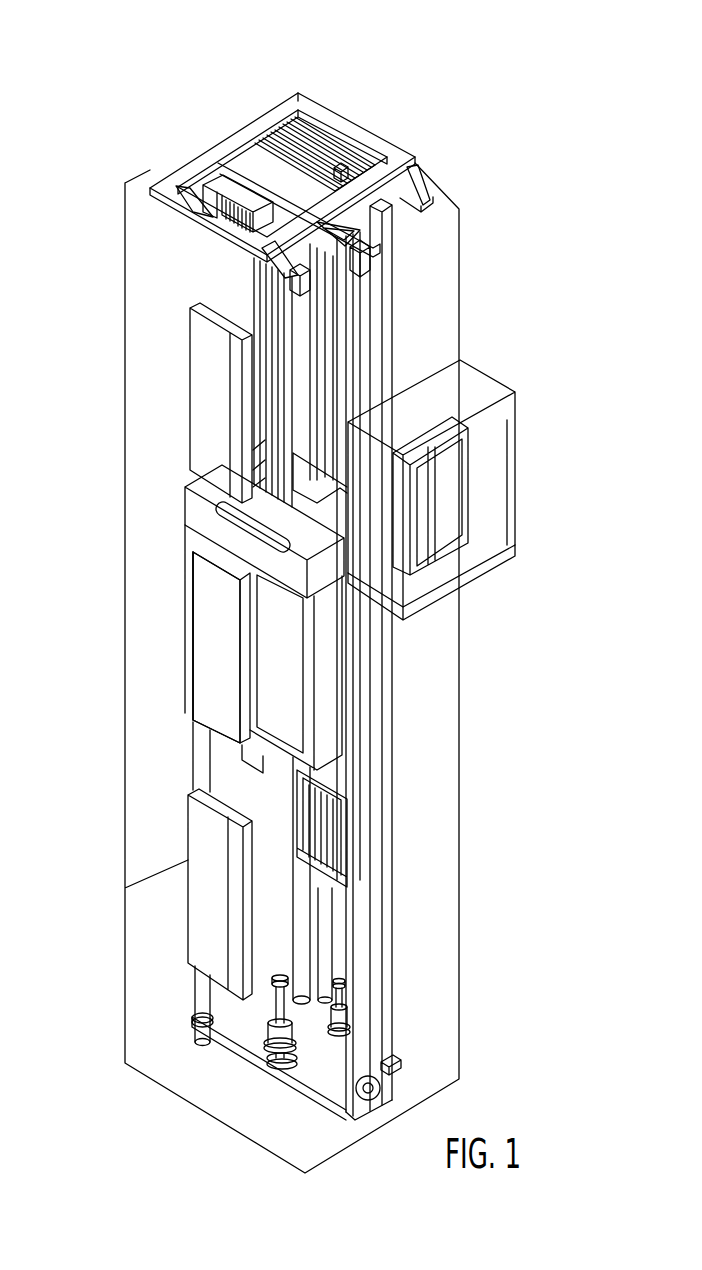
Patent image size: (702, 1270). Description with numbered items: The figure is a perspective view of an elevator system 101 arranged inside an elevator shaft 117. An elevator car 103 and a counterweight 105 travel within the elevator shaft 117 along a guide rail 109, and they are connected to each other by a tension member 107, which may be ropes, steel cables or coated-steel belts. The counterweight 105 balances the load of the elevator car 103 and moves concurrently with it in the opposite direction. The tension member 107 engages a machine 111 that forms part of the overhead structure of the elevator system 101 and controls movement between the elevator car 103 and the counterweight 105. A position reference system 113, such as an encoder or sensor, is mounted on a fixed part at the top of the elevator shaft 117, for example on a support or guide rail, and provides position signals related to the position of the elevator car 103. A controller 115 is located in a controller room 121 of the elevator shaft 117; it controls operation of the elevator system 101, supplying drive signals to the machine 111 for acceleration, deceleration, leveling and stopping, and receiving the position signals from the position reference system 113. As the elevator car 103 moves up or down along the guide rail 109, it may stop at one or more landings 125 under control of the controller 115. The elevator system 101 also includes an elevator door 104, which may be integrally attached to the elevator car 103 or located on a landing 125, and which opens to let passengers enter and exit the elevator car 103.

The elevator system 101 is at (496, 117).
The elevator car 103 is at (287, 672).
The elevator door 104 is at (210, 680).
The counterweight 105 is at (337, 840).
The tension member 107 is at (303, 392).
The guide rail 109 is at (367, 768).
The machine 111 is at (173, 197).
The position reference system 113 is at (367, 260).
The controller 115 is at (462, 496).
The elevator shaft 117 is at (178, 771).
The controller room 121 is at (531, 388).
The landing 125 is at (190, 392).